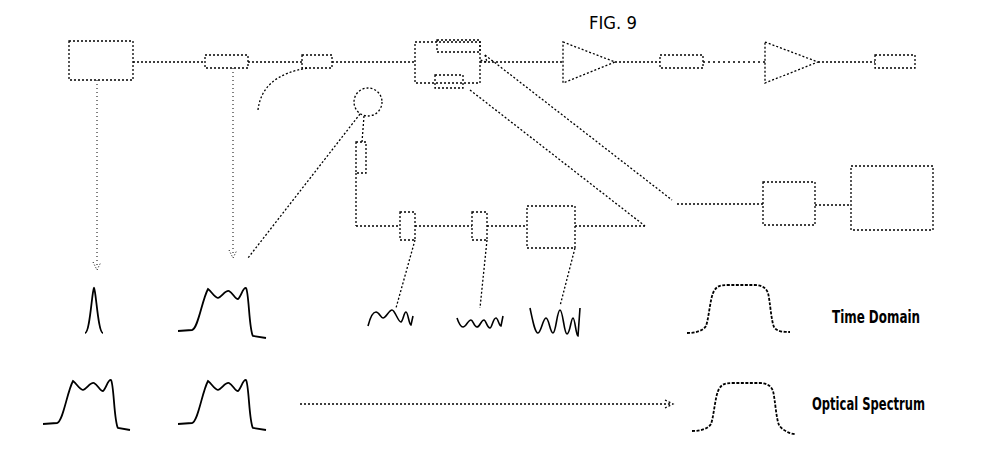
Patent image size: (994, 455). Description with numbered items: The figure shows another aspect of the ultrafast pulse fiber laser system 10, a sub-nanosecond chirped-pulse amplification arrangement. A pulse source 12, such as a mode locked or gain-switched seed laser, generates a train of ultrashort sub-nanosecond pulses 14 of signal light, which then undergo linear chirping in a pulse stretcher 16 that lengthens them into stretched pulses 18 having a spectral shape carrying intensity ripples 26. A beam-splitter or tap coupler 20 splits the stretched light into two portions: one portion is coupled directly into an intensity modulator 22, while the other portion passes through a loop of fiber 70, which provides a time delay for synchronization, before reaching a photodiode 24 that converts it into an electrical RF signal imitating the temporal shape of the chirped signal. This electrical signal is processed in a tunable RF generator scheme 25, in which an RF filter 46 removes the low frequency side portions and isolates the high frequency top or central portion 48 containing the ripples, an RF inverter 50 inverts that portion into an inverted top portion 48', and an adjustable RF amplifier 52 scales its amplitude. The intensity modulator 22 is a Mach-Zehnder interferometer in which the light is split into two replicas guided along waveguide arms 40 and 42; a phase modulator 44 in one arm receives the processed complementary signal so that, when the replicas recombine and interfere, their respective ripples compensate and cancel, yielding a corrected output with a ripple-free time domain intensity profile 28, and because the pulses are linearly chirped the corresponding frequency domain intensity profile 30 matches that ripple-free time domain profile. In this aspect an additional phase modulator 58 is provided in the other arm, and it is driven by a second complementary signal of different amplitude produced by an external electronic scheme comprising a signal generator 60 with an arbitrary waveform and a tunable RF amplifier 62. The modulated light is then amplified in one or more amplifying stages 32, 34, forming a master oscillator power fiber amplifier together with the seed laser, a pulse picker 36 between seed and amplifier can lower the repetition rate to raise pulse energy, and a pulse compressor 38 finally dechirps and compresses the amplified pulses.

The ultrafast pulse fiber laser system 10 is at (730, 122).
The pulse source 12 is at (106, 71).
The ultrashort sub-ns pulses 14 is at (80, 310).
The pulse stretcher 16 is at (222, 66).
The stretched pulses 18 is at (251, 315).
The beam-splitter or tap coupler 20 is at (326, 68).
The intensity modulator 22 is at (487, 60).
The photodiode 24 is at (356, 168).
The RF generator scheme 25 is at (457, 143).
The intensity ripples 26 is at (236, 291).
The time domain intensity profile 28 is at (755, 321).
The flattened optical spectrum 30 is at (755, 421).
The amplifying stage 32 is at (590, 73).
The amplifying stage 34 is at (792, 73).
The pulse picker 36 is at (697, 68).
The pulse compressor 38 is at (898, 68).
The waveguide arm 40 is at (455, 33).
The waveguide arm 42 is at (438, 86).
The phase modulator 44 is at (445, 75).
The RF filter 46 is at (436, 214).
The top or central portion 48 is at (391, 299).
The inverted top portion 48' is at (518, 299).
The RF inverter 50 is at (497, 214).
The RF amplifier 52 is at (560, 237).
The additional phase modulator 58 is at (455, 40).
The signal generator 60 is at (898, 198).
The tunable RF amplifier 62 is at (798, 213).
The loop of fiber 70 is at (382, 106).